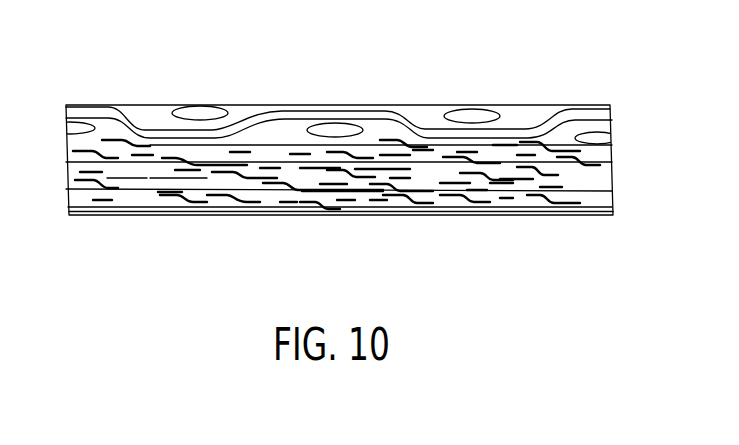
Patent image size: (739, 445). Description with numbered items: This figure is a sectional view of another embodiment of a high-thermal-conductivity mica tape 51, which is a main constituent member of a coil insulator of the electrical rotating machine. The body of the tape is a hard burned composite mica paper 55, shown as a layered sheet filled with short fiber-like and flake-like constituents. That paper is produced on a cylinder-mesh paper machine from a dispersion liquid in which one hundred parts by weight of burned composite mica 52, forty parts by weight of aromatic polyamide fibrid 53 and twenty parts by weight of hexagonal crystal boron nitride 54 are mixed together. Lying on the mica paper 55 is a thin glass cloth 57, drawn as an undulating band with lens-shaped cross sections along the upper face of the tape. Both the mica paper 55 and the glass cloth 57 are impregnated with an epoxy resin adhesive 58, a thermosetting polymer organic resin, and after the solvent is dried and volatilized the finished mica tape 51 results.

The high-thermal-conductivity mica tape 51 is at (607, 256).
The burned composite mica 52 is at (247, 192).
The aromatic polyamide fibrid 53 is at (450, 184).
The hexagonal crystal boron nitride 54 is at (147, 156).
The hard burned composite mica paper 55 is at (628, 142).
The glass cloth 57 is at (600, 109).
The epoxy resin adhesive 58 is at (375, 168).